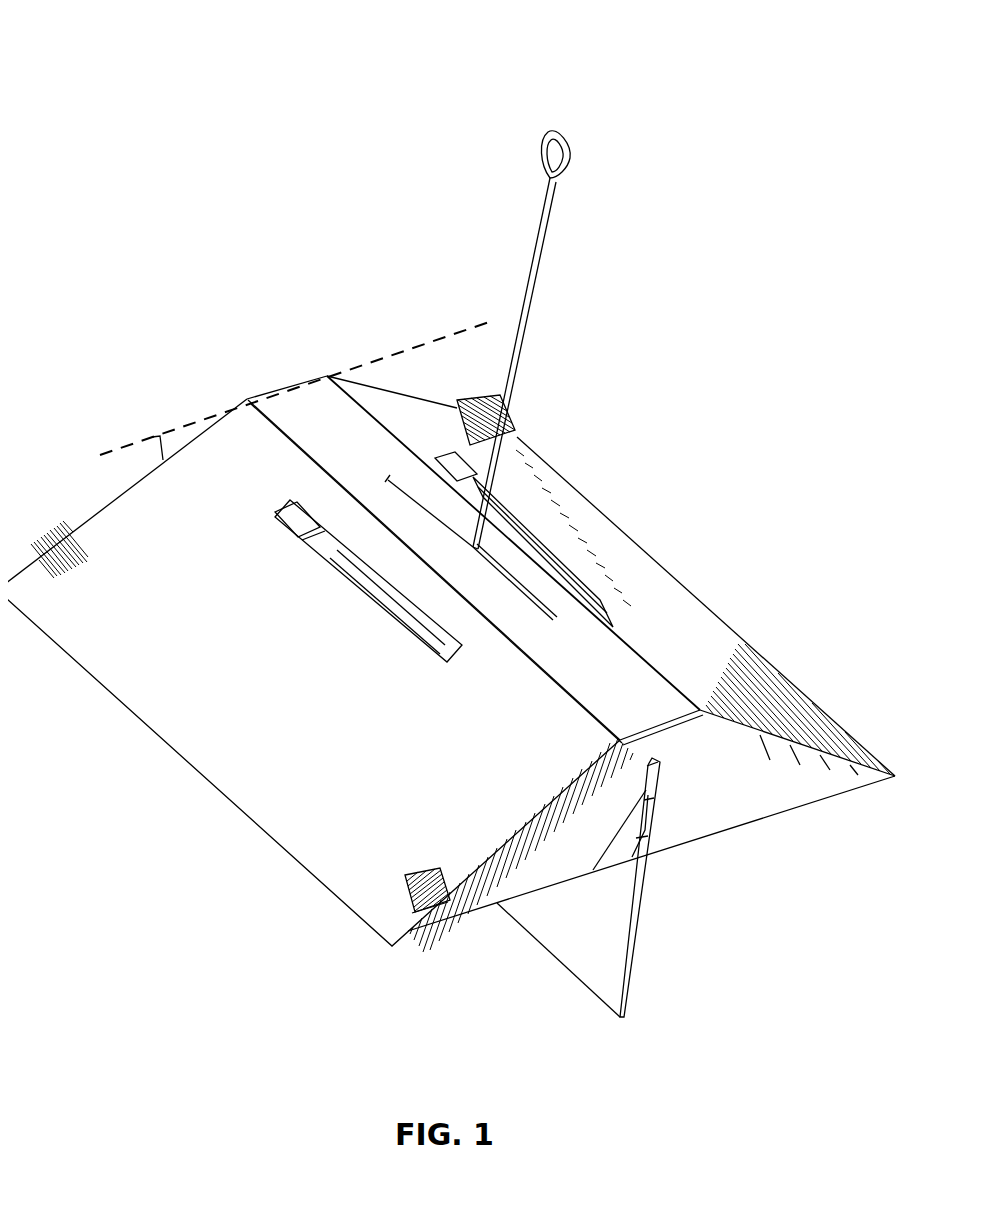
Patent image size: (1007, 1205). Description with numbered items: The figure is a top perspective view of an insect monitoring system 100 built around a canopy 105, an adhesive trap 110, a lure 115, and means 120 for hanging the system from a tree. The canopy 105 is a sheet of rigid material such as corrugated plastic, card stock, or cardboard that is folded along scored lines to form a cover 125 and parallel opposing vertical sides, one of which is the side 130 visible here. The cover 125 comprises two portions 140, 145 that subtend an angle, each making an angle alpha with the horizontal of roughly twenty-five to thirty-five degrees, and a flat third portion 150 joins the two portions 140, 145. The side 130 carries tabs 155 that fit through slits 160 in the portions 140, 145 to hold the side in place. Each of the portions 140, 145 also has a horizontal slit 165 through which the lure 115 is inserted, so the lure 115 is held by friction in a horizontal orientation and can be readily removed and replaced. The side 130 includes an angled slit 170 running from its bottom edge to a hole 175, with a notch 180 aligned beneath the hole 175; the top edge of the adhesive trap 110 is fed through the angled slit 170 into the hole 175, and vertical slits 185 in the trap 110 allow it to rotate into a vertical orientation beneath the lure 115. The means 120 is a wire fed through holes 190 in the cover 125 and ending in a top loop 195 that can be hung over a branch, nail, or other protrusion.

The insect monitoring system 100 is at (220, 120).
The canopy 105 is at (333, 373).
The adhesive trap 110 is at (607, 977).
The lure 115 is at (403, 617).
The means for hanging 120 is at (528, 275).
The cover 125 is at (670, 720).
The vertical side 130 is at (683, 790).
The first portion of the cover 140 is at (240, 730).
The second portion of the cover 145 is at (607, 533).
The flat third portion 150 is at (293, 427).
The tab 155 is at (427, 870).
The slit 160 is at (425, 902).
The horizontal slit 165 is at (293, 500).
The angled slit 170 is at (603, 845).
The hole 175 is at (647, 770).
The notch 180 is at (640, 840).
The vertical slit 185 is at (647, 803).
The hole 190 is at (547, 617).
The top loop 195 is at (563, 143).